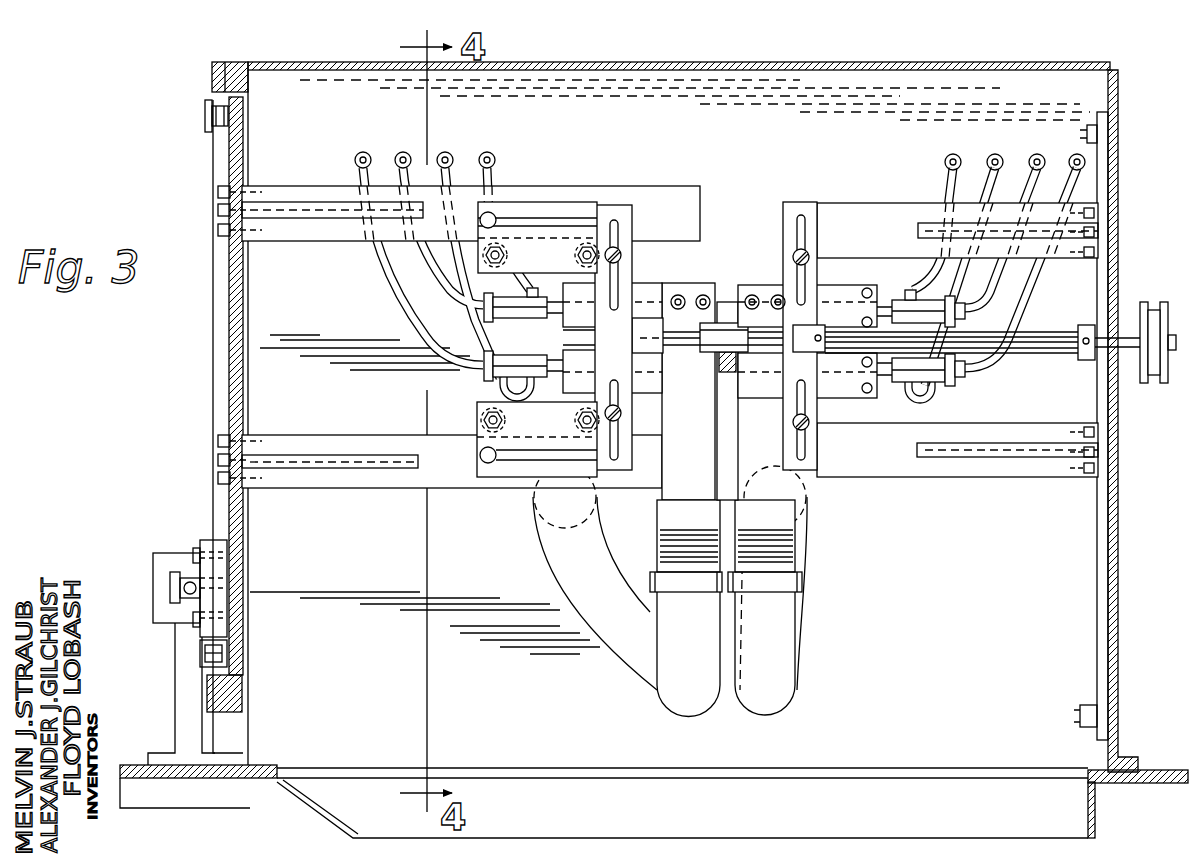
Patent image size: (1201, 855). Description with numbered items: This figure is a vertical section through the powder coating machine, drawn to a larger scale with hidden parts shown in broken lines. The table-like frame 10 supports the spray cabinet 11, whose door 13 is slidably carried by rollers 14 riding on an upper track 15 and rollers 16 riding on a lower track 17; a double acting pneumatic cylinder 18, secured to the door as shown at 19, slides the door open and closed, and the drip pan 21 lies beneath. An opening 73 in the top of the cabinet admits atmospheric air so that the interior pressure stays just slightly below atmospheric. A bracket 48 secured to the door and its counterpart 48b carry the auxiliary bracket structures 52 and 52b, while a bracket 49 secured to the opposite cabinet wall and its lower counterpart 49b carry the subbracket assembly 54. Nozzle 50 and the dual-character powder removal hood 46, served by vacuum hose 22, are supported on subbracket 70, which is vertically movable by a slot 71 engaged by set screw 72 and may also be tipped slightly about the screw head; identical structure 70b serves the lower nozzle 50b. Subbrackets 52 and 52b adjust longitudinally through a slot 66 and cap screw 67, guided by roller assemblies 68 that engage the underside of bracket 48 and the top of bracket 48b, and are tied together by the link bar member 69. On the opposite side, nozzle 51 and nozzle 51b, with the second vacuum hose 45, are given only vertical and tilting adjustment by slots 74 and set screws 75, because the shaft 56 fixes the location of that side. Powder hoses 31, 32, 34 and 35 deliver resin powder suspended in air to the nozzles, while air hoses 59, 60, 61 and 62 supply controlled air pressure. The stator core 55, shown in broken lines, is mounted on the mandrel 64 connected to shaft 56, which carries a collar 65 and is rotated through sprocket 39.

The table-like frame 10 is at (1156, 768).
The spray cabinet 11 is at (1120, 531).
The door 13 is at (232, 336).
The rollers 14 is at (205, 114).
The upper track 15 is at (213, 76).
The rollers 16 is at (205, 656).
The lower track 17 is at (215, 695).
The pneumatic cylinder 18 is at (158, 556).
The cylinder-to-door securement 19 is at (212, 543).
The drip pan 21 is at (700, 840).
The vacuum hose 22 is at (627, 690).
The powder hose 31 is at (405, 302).
The powder hose 32 is at (452, 287).
The powder hose 34 is at (1034, 189).
The powder hose 35 is at (1074, 189).
The sprocket 39 is at (1138, 375).
The second vacuum hose 45 is at (787, 628).
The powder removal hood structure 46 is at (665, 500).
The bracket 48 is at (674, 186).
The counterpart bracket 48b is at (463, 488).
The bracket structure 49 is at (872, 206).
The lower right guide plate 49b is at (924, 477).
The nozzle 50 is at (522, 300).
The lower nozzle 50b is at (540, 346).
The nozzle 51 is at (934, 300).
The lower nozzle 51b is at (905, 384).
The auxiliary bracket structure 52 is at (637, 282).
The auxiliary bracket assembly 52b is at (637, 408).
The subbracket assembly 54 is at (782, 276).
The stator core 55 is at (725, 372).
The shaft 56 is at (1066, 355).
The air hose 59 is at (450, 158).
The air hose 60 is at (491, 166).
The air hose 61 is at (950, 189).
The air hose 62 is at (988, 176).
The mandrel 64 is at (706, 334).
The shaft collar 65 is at (1086, 325).
The slot 66 is at (530, 205).
The cap screw 67 is at (482, 217).
The guide or roller assembly 68 is at (575, 255).
The link bar member 69 is at (607, 338).
The subbracket 70 is at (632, 214).
The lower subbracket 70b is at (578, 403).
The slot 71 is at (628, 233).
The set screw 72 is at (622, 255).
The opening 73 is at (796, 63).
The slot 74 is at (802, 222).
The set screw 75 is at (808, 250).